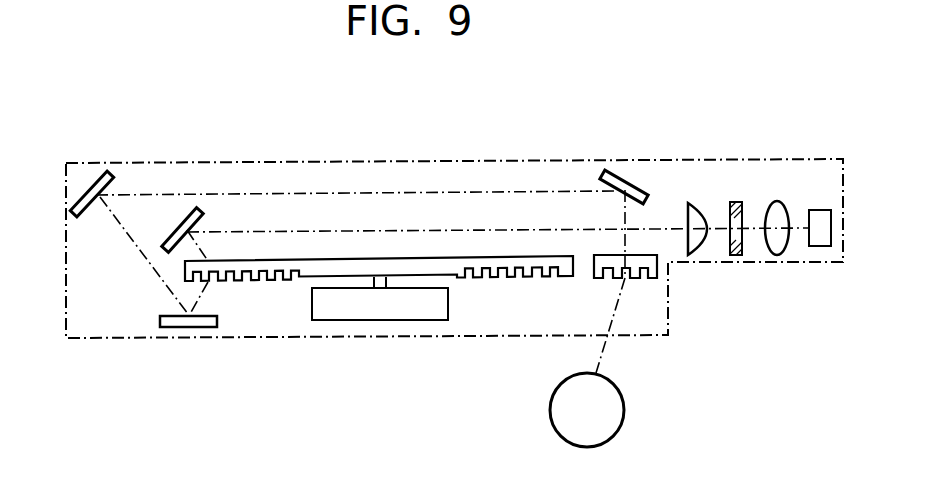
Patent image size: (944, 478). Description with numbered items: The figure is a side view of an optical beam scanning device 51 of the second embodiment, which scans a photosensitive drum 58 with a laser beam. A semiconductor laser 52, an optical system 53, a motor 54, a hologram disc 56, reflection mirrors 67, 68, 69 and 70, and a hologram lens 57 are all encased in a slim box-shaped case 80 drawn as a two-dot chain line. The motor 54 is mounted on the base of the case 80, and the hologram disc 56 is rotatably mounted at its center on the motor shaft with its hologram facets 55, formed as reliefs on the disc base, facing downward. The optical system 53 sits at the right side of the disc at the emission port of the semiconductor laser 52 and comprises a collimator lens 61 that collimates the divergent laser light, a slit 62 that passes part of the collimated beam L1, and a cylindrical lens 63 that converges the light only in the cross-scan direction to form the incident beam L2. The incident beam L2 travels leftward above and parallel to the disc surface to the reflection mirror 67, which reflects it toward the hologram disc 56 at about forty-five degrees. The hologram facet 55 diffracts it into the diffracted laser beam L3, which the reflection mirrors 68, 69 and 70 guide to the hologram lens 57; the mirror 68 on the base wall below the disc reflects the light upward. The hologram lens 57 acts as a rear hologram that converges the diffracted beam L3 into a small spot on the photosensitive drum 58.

The optical beam scanning device 51 is at (213, 115).
The semiconductor laser 52 is at (822, 243).
The optical system 53 is at (738, 279).
The motor 54 is at (383, 310).
The hologram facets 55 is at (267, 283).
The hologram disc 56 is at (357, 266).
The hologram lens 57 is at (650, 278).
The photosensitive drum 58 is at (610, 405).
The collimator lens 61 is at (779, 260).
The slit 62 is at (737, 256).
The cylindrical lens 63 is at (697, 256).
The reflection mirror 67 is at (177, 232).
The reflection mirror 68 is at (188, 323).
The reflection mirror 69 is at (86, 192).
The reflection mirror 70 is at (626, 186).
The case 80 is at (118, 338).
The collimated beam L1 is at (716, 226).
The incident beam L2 is at (440, 232).
The diffracted laser beam L3 is at (517, 192).